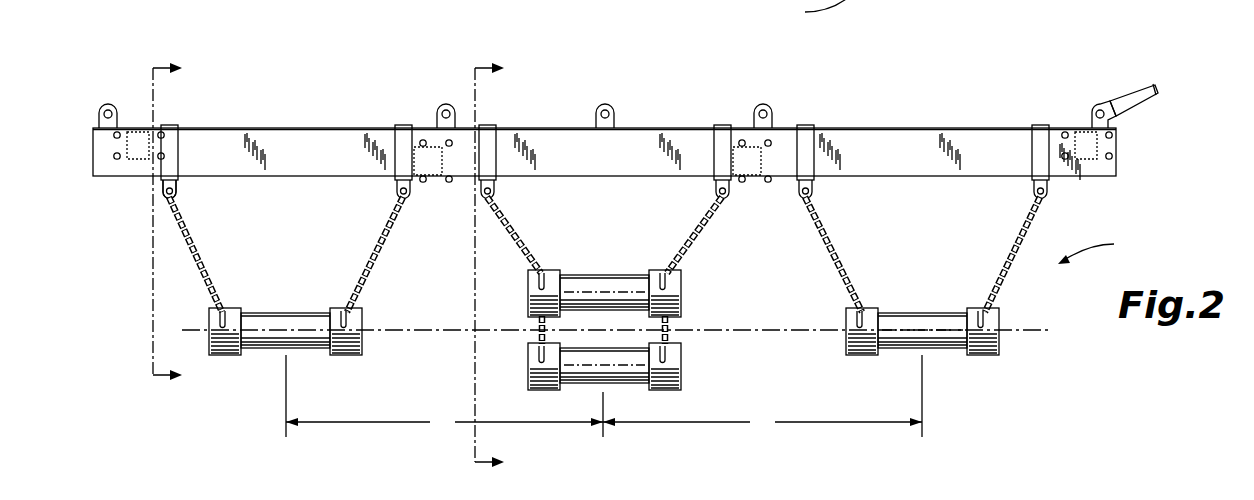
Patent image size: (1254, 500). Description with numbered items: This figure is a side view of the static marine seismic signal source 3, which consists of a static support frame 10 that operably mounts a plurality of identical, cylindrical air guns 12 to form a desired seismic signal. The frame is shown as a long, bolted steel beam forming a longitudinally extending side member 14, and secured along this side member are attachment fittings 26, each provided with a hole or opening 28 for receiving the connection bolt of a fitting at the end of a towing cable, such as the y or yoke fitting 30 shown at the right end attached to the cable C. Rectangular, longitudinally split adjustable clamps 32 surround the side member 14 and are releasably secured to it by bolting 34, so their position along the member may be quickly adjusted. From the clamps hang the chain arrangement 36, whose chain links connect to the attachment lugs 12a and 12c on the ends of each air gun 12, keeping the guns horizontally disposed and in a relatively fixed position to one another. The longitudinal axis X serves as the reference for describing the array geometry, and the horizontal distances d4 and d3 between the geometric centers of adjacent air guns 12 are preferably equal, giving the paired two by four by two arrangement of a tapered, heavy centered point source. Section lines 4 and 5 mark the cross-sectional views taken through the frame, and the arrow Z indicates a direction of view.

The seismic signal source 3 is at (334, 86).
The static support frame 10 is at (186, 0).
The air gun 12 is at (290, 312).
The attachment lug 12a is at (212, 325).
The attachment lug 12c is at (360, 325).
The side member 14 is at (997, 128).
The attachment fitting 26 is at (607, 106).
The hole or opening 28 is at (757, 122).
The y or yoke fitting 30 is at (1097, 106).
The crane cable C is at (1139, 94).
The adjustable clamp 32 is at (172, 126).
The bolting 34 is at (166, 194).
The chain arrangement 36 is at (200, 232).
The longitudinal axis X is at (616, 333).
The direction Z is at (959, 132).
The section line for FIG. 4 is at (157, 222).
The section line for FIG. 5 is at (478, 267).
The horizontal distance d4 is at (444, 397).
The horizontal distance d3 is at (762, 397).